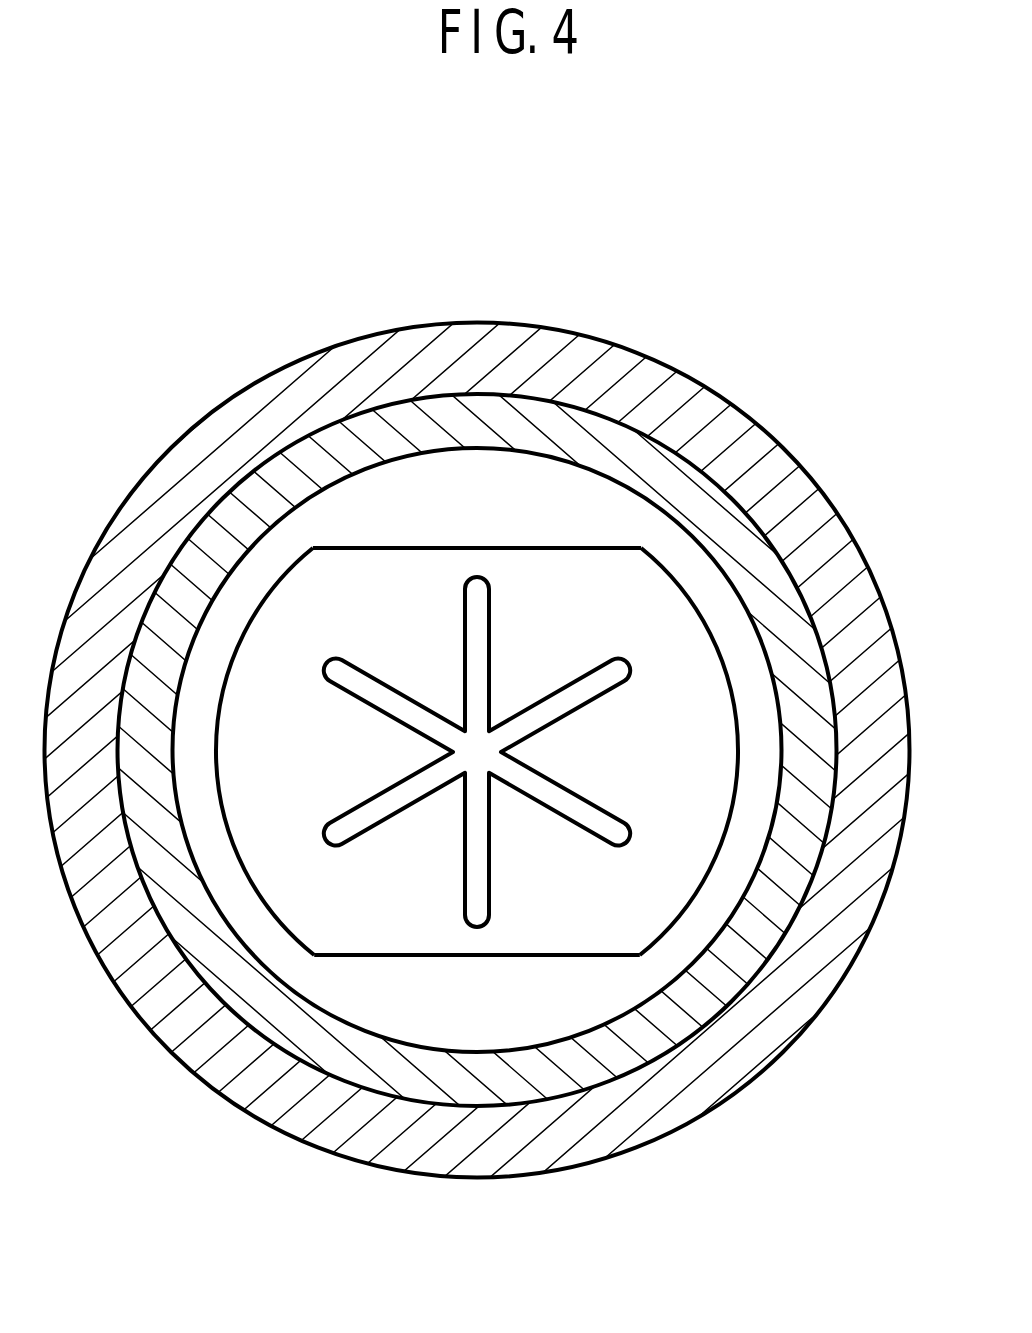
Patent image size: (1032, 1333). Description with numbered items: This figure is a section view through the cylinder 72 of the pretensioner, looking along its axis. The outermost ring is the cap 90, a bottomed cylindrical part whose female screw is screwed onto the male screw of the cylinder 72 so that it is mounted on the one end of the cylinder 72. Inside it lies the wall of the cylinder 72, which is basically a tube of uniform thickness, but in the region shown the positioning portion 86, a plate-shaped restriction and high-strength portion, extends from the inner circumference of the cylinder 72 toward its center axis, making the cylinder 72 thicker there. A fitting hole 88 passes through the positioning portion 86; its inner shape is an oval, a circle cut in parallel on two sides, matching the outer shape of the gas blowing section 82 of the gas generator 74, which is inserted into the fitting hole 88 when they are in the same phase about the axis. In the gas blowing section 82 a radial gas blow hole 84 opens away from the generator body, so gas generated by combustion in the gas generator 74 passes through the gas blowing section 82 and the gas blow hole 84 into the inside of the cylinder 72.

The cylinder 72 is at (474, 1108).
The gas generator 74 is at (528, 905).
The gas blowing section 82 is at (411, 937).
The gas blow hole 84 is at (573, 808).
The positioning portion 86 is at (522, 478).
The fitting hole 88 is at (376, 550).
The cap 90 is at (730, 393).